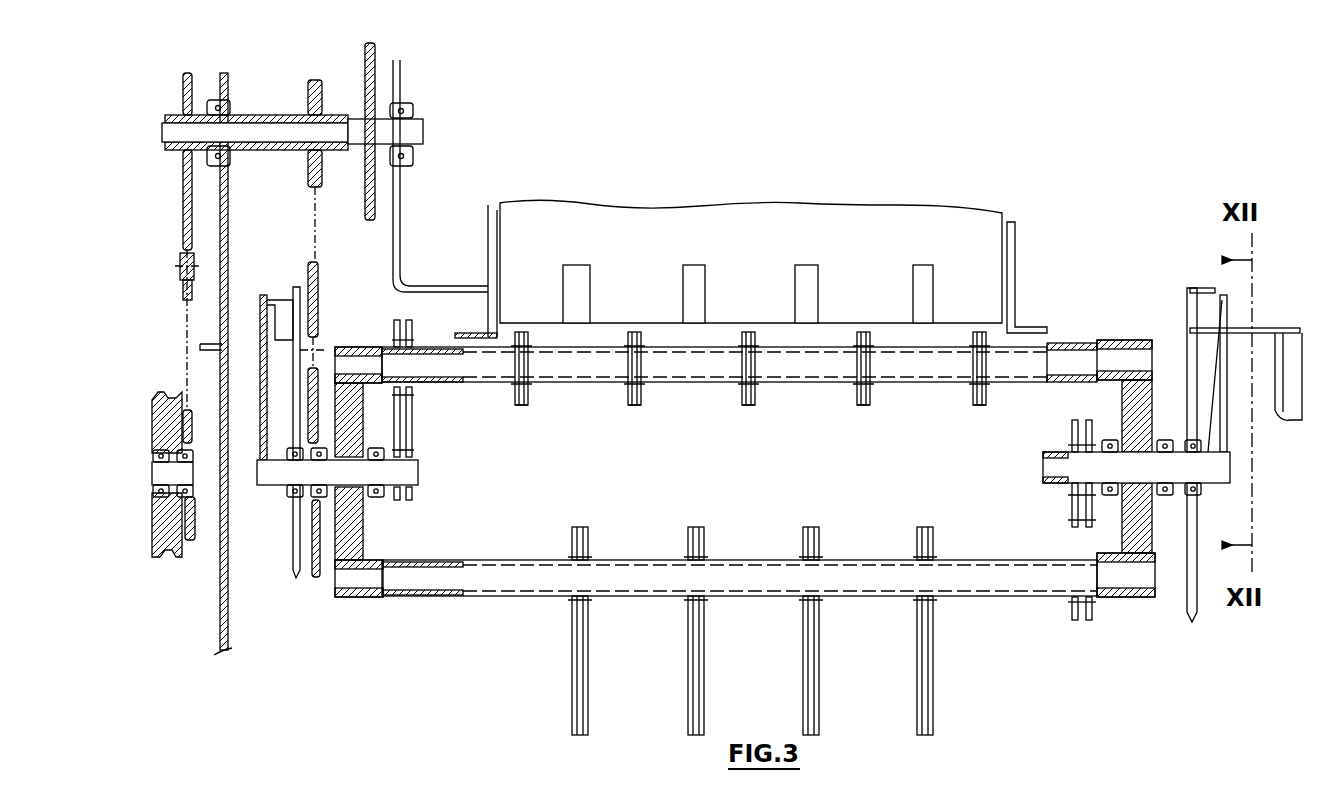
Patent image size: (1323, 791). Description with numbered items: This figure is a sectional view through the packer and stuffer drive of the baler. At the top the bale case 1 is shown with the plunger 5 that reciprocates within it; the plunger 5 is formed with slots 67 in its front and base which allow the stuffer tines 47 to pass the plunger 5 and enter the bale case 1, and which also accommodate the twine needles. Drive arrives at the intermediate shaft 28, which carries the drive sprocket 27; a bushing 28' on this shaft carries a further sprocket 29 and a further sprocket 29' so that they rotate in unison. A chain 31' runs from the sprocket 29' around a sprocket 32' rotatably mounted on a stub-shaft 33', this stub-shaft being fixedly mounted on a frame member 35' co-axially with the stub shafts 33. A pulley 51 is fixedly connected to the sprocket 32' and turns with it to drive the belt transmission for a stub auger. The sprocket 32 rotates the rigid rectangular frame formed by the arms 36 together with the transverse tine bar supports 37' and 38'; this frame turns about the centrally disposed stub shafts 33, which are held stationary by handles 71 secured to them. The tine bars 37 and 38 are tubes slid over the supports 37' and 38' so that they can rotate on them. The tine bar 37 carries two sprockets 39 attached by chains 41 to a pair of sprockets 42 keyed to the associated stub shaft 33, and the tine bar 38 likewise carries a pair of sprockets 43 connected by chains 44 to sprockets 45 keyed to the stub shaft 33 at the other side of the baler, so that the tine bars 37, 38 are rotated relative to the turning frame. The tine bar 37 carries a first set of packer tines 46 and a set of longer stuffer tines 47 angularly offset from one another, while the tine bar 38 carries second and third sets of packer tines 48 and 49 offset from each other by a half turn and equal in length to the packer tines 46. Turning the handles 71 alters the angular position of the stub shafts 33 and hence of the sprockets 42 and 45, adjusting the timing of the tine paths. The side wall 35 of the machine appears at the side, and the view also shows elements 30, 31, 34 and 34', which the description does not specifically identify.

The bale case 1 is at (488, 236).
The plunger 5 is at (715, 215).
The drive sprocket 27 is at (375, 62).
The intermediate shaft 28 is at (292, 111).
The bushing 28' is at (256, 103).
The sprocket 29 is at (286, 173).
The sprocket 29' is at (166, 152).
The sprocket 30 is at (322, 100).
The chain 31 is at (338, 223).
The chain 31' is at (150, 307).
The sprocket 32 is at (315, 570).
The sprocket 32' is at (157, 432).
The stub shaft 33 is at (743, 468).
The stub-shaft 33' is at (156, 522).
The sprocket 34 is at (333, 348).
The sprocket 34' is at (159, 279).
The side wall 35 is at (748, 467).
The frame member 35' is at (245, 364).
The arms 36 is at (363, 530).
The tine bar 37 is at (768, 547).
The tine bar support 37' is at (399, 609).
The tine bar 38 is at (767, 384).
The tine bar support 38' is at (400, 341).
The sprockets 39 is at (1075, 620).
The chains 41 is at (1072, 510).
The sprockets 42 is at (1075, 430).
The sprockets 43 is at (396, 320).
The chains 44 is at (412, 430).
The sprockets 45 is at (410, 496).
The packer tines 46 is at (688, 535).
The stuffer tines 47 is at (688, 700).
The packer tines 48 is at (628, 338).
The packer tines 49 is at (518, 404).
The pulley 51 is at (155, 395).
The slots 67 is at (683, 282).
The handles 71 is at (262, 330).